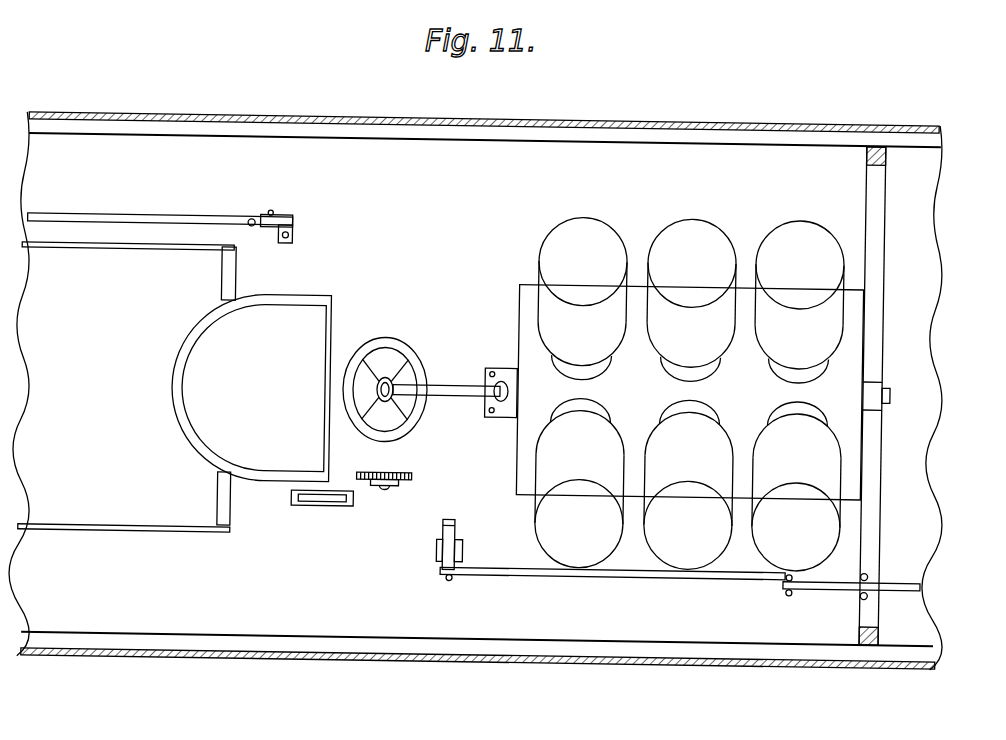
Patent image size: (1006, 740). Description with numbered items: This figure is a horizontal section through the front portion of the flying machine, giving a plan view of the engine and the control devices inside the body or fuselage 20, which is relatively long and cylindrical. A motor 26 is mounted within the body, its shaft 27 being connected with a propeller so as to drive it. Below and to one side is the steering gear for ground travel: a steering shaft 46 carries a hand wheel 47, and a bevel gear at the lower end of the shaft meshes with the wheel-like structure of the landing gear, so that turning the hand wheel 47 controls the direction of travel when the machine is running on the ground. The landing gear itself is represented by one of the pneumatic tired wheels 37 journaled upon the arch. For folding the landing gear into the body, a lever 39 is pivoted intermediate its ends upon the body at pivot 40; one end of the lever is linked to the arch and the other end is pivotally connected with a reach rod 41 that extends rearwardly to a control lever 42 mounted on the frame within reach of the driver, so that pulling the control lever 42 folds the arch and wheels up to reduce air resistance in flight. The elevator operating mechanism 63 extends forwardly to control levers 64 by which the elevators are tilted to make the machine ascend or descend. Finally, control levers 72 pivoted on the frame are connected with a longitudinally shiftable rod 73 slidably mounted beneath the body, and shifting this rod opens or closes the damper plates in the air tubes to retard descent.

The body or fuselage 20 is at (260, 118).
The motor 26 is at (689, 394).
The motor shaft 27 is at (888, 386).
The pneumatic tired wheel 37 is at (251, 387).
The lever 39 is at (906, 580).
The pivot of lever 40 is at (877, 574).
The reach rod 41 is at (666, 581).
The control lever 42 is at (454, 520).
The steering shaft 46 is at (451, 389).
The hand wheel 47 is at (401, 350).
The operating mechanism 63 is at (88, 255).
The control lever 64 is at (223, 255).
The control lever 72 is at (252, 225).
The longitudinally shiftable rod 73 is at (107, 219).